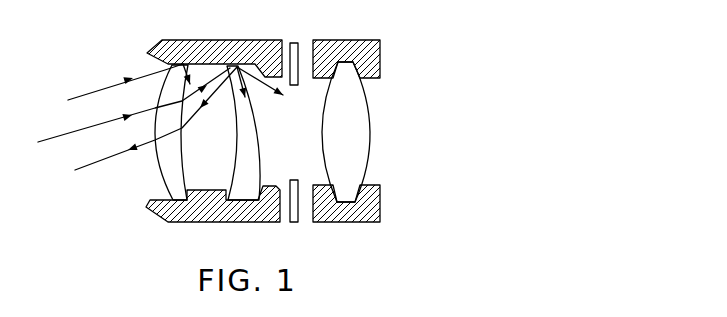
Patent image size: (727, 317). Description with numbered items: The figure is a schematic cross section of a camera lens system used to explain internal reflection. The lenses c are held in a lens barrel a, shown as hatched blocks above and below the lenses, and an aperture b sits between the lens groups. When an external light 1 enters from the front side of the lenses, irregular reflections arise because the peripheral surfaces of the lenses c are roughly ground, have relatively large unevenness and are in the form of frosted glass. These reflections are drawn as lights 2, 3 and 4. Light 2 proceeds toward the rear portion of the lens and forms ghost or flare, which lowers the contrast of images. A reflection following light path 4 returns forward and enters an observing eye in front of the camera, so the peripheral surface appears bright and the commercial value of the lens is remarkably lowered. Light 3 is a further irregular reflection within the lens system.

The external light 1 is at (134, 114).
The light 2 is at (241, 87).
The light 3 is at (244, 97).
The light path 4 is at (155, 129).
The lens barrel a is at (201, 40).
The aperture b is at (298, 42).
The lenses c is at (163, 173).